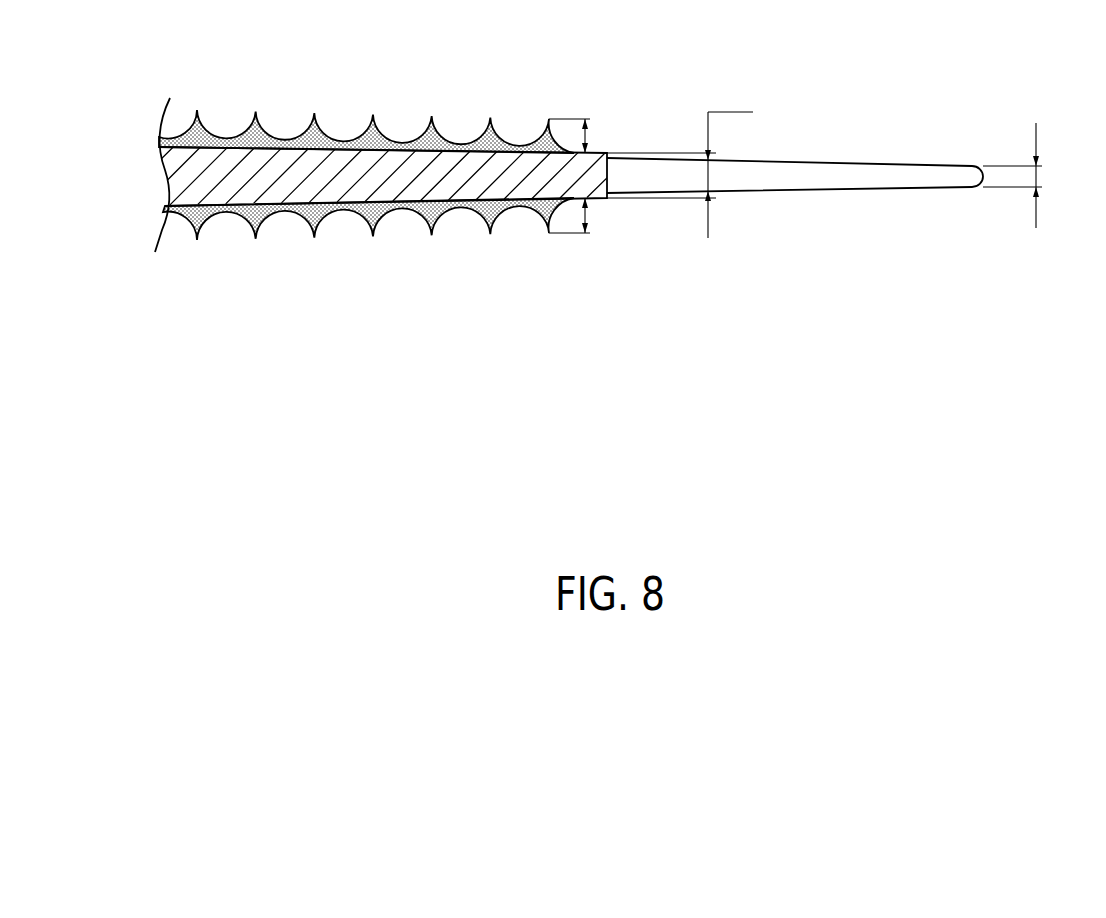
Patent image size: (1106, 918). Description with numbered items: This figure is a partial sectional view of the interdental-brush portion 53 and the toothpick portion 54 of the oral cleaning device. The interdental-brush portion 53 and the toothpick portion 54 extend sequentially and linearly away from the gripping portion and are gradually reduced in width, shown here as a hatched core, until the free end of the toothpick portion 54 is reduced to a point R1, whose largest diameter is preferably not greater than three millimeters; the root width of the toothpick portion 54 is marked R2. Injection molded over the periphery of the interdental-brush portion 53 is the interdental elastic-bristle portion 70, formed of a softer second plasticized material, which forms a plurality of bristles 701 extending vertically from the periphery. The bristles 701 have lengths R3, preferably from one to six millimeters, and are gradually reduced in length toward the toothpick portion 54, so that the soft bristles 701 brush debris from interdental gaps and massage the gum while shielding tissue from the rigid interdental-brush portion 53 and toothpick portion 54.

The interdental elastic-bristle portion 70 is at (415, 140).
The bristles 701 is at (432, 117).
The interdental-brush portion 53 is at (415, 194).
The toothpick portion 54 is at (840, 222).
The point R1 is at (1028, 175).
The shaft root radius dimension R2 is at (729, 161).
The lengths R3 is at (583, 176).